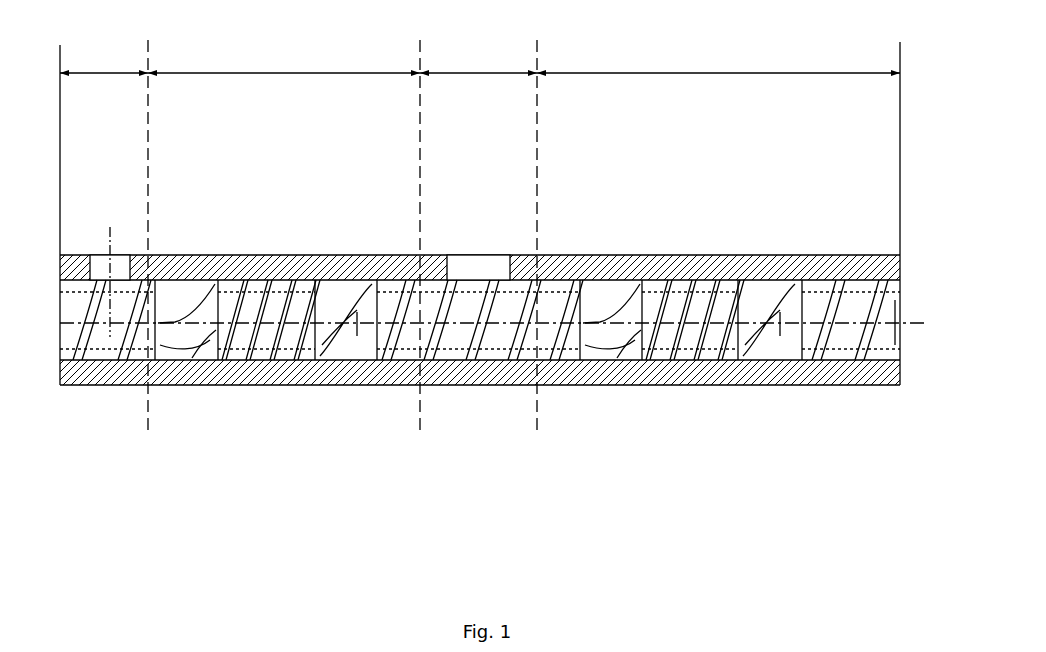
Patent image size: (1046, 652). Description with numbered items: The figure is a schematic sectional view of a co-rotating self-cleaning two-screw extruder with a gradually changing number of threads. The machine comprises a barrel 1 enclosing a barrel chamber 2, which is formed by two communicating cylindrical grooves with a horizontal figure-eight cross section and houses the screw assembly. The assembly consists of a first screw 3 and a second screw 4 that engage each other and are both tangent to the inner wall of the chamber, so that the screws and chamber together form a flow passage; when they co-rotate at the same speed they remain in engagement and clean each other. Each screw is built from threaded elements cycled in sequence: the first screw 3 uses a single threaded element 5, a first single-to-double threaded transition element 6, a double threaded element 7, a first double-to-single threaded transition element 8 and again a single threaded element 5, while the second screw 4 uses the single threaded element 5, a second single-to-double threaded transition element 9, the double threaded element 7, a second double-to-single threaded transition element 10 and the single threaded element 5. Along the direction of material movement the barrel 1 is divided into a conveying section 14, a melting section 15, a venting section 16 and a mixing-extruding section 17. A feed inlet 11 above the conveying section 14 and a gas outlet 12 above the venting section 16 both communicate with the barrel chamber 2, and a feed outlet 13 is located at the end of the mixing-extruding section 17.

The barrel 1 is at (80, 383).
The barrel chamber 2 is at (116, 385).
The first screw 3 is at (207, 383).
The second screw 4 is at (257, 383).
The single threaded element 5 is at (148, 290).
The first single-to-double threaded transition element 6 is at (166, 290).
The double threaded element 7 is at (287, 282).
The first double-to-single threaded transition element 8 is at (328, 285).
The second single-to-double threaded transition element 9 is at (190, 380).
The second double-to-single threaded transition element 10 is at (347, 383).
The feed inlet 11 is at (110, 227).
The gas outlet 12 is at (480, 250).
The feed outlet 13 is at (895, 330).
The conveying section 14 is at (104, 147).
The melting section 15 is at (284, 235).
The venting section 16 is at (478, 235).
The mixing-extruding section 17 is at (718, 235).